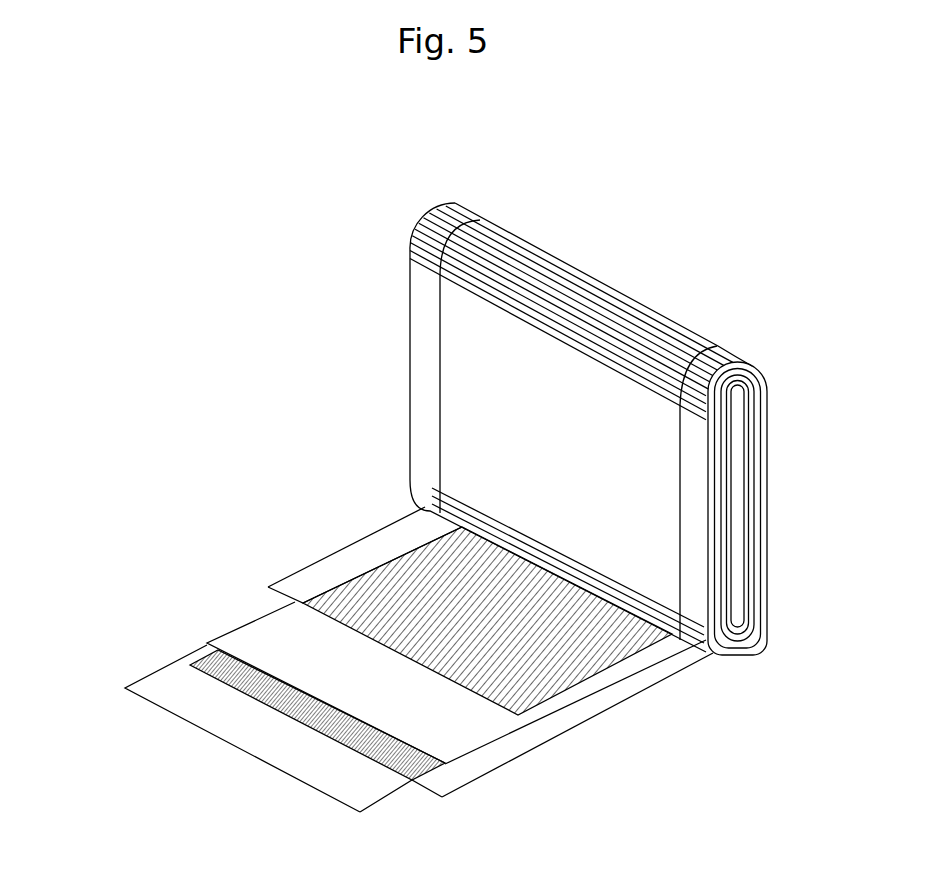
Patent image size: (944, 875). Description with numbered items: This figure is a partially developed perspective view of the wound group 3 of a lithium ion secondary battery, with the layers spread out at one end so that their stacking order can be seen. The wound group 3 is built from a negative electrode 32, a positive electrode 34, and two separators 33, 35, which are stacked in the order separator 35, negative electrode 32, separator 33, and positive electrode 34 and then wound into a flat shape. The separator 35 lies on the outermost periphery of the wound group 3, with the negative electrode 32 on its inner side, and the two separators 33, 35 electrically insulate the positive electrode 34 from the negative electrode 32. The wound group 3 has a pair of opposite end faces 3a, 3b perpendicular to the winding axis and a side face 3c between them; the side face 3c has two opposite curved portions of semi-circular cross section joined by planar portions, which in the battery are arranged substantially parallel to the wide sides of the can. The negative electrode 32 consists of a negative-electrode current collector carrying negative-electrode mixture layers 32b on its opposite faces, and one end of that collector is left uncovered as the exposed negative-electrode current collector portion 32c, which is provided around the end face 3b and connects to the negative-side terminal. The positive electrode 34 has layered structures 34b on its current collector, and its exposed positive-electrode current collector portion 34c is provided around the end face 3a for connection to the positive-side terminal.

The wound group 3 is at (292, 170).
The end face 3a is at (413, 243).
The end face 3b is at (754, 408).
The side face 3c is at (573, 312).
The negative electrode 32 is at (305, 723).
The negative-electrode mixture layers 32b is at (192, 660).
The exposed negative-electrode current collector portion 32c is at (696, 512).
The separator 33 is at (253, 618).
The positive electrode 34 is at (630, 650).
The layered structures 34b is at (556, 700).
The exposed positive-electrode current collector portion 34c is at (425, 358).
The separator 35 is at (153, 673).